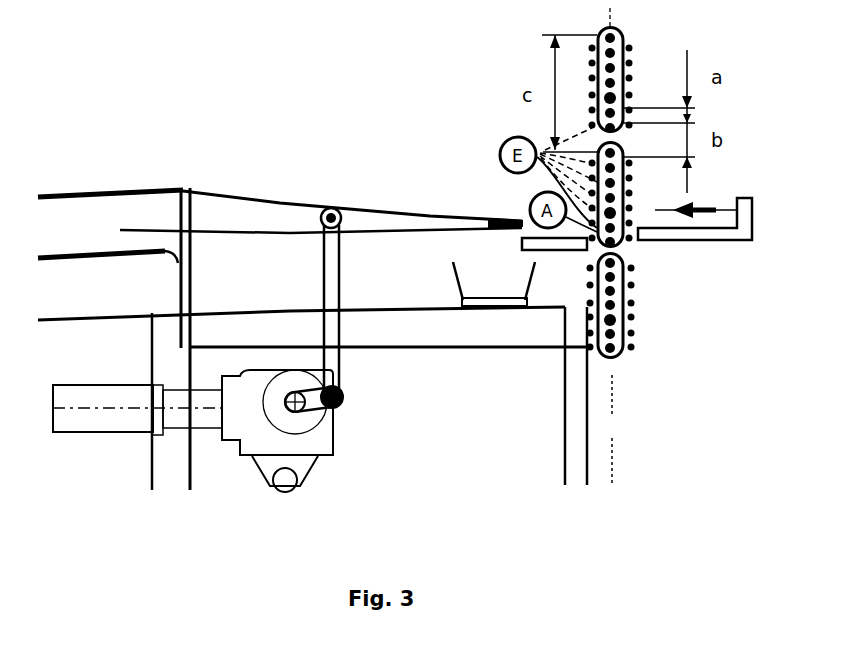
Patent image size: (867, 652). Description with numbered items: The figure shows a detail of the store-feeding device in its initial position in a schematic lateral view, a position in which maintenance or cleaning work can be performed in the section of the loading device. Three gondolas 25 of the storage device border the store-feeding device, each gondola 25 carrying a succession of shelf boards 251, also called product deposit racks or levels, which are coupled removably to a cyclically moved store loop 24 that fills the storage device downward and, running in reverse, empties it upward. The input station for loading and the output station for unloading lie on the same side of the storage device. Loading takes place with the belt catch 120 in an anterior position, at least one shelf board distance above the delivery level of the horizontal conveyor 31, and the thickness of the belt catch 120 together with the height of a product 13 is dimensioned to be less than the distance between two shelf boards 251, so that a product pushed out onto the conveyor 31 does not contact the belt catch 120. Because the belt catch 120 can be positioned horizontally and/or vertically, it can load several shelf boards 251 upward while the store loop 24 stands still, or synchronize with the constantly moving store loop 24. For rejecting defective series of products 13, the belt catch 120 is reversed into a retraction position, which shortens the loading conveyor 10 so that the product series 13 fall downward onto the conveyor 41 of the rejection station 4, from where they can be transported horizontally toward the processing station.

The loading conveyor 10 is at (212, 156).
The product 13 is at (350, 204).
The belt catch 120 is at (513, 219).
The rejection station 4 is at (492, 261).
The conveyor 41 is at (490, 307).
The conveyor 31 is at (558, 252).
The gondola 25 is at (618, 258).
The shelf board 251 is at (632, 298).
The store loop 24 is at (613, 442).